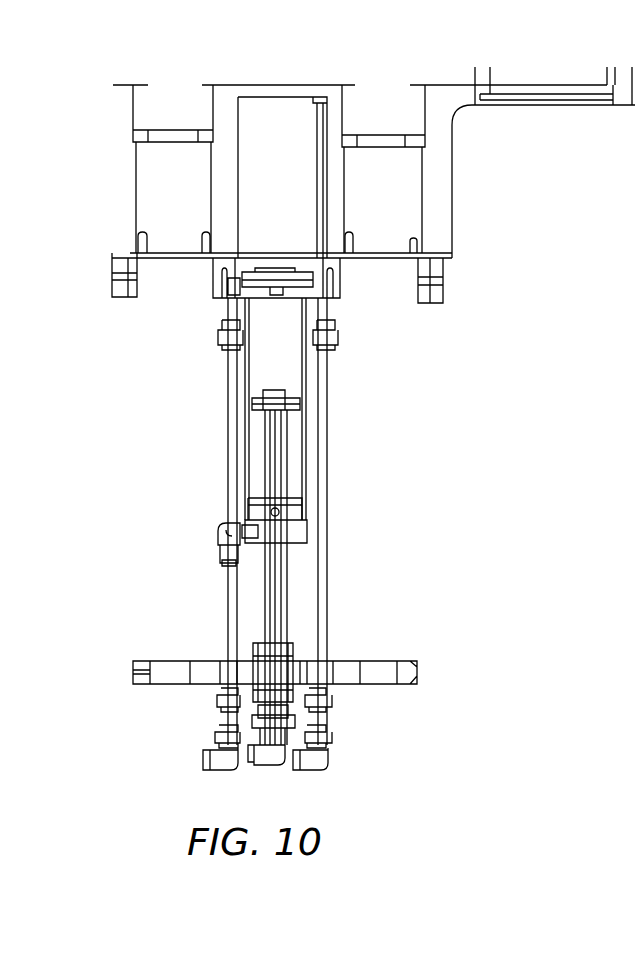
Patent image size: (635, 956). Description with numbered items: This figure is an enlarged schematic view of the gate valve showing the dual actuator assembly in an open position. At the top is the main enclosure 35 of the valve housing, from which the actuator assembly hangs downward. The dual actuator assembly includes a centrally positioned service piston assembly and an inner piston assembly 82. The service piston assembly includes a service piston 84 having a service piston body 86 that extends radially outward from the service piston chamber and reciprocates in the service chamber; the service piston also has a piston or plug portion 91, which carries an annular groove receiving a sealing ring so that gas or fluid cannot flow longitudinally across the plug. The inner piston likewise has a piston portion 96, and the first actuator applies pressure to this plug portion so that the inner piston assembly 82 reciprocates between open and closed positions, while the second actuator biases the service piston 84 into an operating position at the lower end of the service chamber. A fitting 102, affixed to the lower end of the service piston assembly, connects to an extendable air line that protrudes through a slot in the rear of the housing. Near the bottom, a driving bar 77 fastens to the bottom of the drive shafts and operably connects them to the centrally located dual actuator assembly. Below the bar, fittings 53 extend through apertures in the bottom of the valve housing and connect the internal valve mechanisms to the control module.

The main enclosure 35 is at (450, 187).
The piston or plug portion 91 is at (232, 283).
The service piston 84 is at (310, 312).
The service piston body 86 is at (260, 362).
The piston portion 96 is at (298, 405).
The inner piston assembly 82 is at (292, 422).
The fitting 102 is at (218, 542).
The driving bar 77 is at (412, 677).
The fittings 53 is at (223, 775).